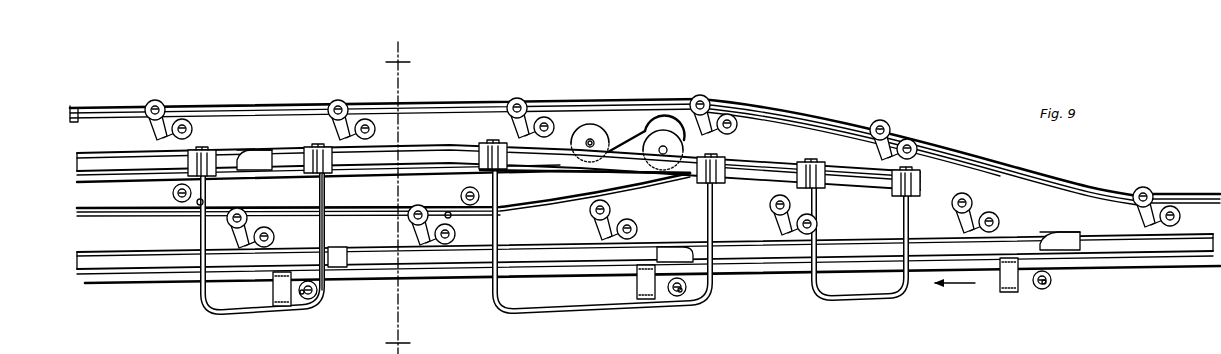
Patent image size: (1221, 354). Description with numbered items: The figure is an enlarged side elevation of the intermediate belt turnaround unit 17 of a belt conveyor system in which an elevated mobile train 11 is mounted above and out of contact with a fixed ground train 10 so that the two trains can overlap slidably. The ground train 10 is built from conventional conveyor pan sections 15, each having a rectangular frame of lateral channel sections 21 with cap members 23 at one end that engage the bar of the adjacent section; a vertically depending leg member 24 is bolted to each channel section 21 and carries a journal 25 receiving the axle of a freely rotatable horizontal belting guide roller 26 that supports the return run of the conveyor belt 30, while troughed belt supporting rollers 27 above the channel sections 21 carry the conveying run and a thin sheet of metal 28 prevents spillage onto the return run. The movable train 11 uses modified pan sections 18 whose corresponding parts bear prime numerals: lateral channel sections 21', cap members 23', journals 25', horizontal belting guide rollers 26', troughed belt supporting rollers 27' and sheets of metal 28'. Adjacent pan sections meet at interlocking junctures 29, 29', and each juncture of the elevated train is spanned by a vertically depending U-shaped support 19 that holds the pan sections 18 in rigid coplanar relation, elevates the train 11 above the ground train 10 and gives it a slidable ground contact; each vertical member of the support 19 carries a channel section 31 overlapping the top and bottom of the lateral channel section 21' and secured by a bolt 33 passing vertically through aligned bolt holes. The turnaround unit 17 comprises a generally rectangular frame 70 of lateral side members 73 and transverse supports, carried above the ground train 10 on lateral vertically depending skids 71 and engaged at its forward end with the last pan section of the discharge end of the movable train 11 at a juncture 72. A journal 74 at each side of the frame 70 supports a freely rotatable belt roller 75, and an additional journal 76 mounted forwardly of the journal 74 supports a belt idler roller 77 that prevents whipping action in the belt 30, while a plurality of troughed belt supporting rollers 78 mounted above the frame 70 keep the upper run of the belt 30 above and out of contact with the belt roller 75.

The ground train 10 is at (396, 63).
The elevated mobile train 11 is at (118, 188).
The conveyor pan sections 15 is at (104, 250).
The intermediate belt turnaround unit 17 is at (918, 92).
The modified pan sections 18 is at (103, 146).
The vertically depending U-shaped support 19 is at (330, 284).
The lateral channel section 21 is at (645, 256).
The lateral channel section 21' is at (498, 157).
The cap member 23 is at (726, 257).
The cap member 23' is at (254, 120).
The vertically depending leg member 24 is at (270, 286).
The journal 25 is at (659, 306).
The journal 25' is at (338, 213).
The horizontal belting guide roller 26 is at (694, 300).
The horizontal belting guide roller 26' is at (309, 194).
The troughed belt supporting rollers 27 is at (718, 196).
The troughed belt supporting rollers 27' is at (363, 133).
The thin sheet of metal 28 is at (645, 268).
The thin sheet of metal 28' is at (318, 124).
The interlocking juncture 29 is at (1045, 215).
The interlocking juncture 29' is at (241, 109).
The conveyor belt 30 is at (500, 93).
The channel section 31 is at (310, 148).
The bolt 33 is at (318, 146).
The generally rectangular frame 70 is at (762, 160).
The lateral vertically depending skids 71 is at (500, 311).
The juncture 72 is at (552, 172).
The lateral side members 73 is at (775, 168).
The journal 74 is at (663, 130).
The belt roller 75 is at (676, 130).
The additional journal 76 is at (598, 130).
The belt idler roller 77 is at (593, 140).
The troughed belt supporting rollers 78 is at (703, 96).